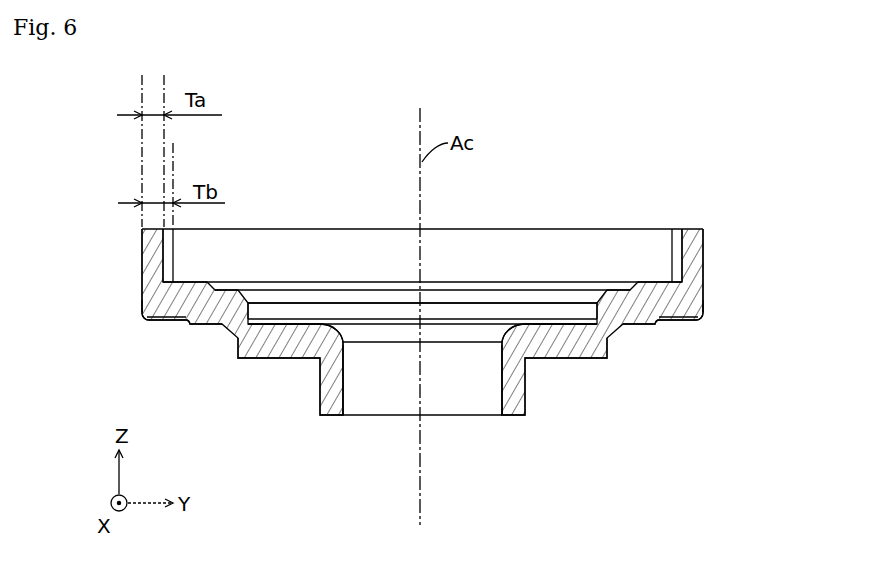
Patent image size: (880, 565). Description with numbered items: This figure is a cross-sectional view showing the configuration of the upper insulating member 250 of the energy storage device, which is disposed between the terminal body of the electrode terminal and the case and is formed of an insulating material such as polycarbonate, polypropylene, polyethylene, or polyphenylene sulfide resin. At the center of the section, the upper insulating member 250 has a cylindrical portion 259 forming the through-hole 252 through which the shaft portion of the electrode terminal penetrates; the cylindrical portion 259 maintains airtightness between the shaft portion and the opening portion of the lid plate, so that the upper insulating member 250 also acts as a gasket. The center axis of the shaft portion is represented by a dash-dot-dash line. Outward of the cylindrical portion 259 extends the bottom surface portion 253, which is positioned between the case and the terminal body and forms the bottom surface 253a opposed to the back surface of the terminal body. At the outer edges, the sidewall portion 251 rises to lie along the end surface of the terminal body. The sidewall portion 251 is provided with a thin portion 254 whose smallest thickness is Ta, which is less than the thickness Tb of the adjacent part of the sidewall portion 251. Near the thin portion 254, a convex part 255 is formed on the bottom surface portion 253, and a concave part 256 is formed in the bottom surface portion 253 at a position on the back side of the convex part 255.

The upper insulating member 250 is at (712, 134).
The sidewall portion 251 is at (140, 290).
The through-hole 252 is at (472, 397).
The bottom surface portion 253 is at (622, 292).
The bottom surface 253a is at (623, 287).
The thin portion 254 is at (143, 257).
The convex part 255 is at (185, 287).
The concave part 256 is at (171, 323).
The cylindrical portion 259 is at (328, 382).